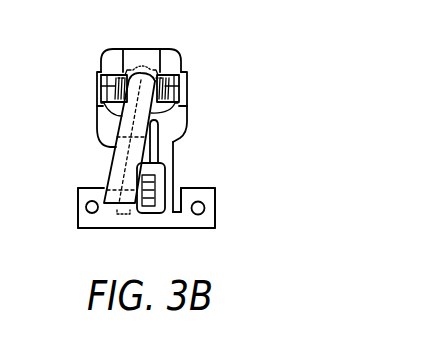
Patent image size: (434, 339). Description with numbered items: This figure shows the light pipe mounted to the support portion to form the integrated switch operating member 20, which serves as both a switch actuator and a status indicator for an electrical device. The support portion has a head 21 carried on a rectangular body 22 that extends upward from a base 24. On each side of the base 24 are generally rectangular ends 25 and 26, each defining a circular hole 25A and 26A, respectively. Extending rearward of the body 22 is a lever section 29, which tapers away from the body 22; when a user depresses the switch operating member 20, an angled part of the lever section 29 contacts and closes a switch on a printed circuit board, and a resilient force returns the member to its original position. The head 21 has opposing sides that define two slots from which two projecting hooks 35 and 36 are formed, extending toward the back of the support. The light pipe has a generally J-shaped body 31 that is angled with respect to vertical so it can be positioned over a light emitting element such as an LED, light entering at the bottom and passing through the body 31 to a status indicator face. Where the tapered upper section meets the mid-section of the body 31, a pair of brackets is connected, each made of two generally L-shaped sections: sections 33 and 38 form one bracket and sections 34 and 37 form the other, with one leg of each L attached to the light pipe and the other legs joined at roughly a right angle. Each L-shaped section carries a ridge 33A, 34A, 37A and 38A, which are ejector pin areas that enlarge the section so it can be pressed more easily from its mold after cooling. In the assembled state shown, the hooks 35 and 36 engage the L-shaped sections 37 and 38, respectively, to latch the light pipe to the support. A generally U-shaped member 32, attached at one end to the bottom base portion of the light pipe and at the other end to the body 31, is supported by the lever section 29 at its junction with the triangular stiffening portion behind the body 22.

The integrated switch operating member 20 is at (274, 88).
The head 21 is at (175, 132).
The body 22 is at (169, 147).
The base 24 is at (124, 224).
The end 25 is at (88, 224).
The circular hole 25A is at (86, 206).
The end 26 is at (199, 226).
The circular hole 26A is at (201, 213).
The lever section 29 is at (148, 192).
The body 31 is at (114, 152).
The U-shaped member 32 is at (176, 214).
The L-shaped section 33 is at (185, 106).
The ridge 33A is at (168, 124).
The L-shaped section 34 is at (100, 93).
The ridge 34A is at (106, 118).
The hook 35 is at (102, 71).
The hook 36 is at (187, 89).
The L-shaped section 37 is at (98, 82).
The ridge 37A is at (122, 73).
The L-shaped section 38 is at (189, 100).
The ridge 38A is at (160, 73).